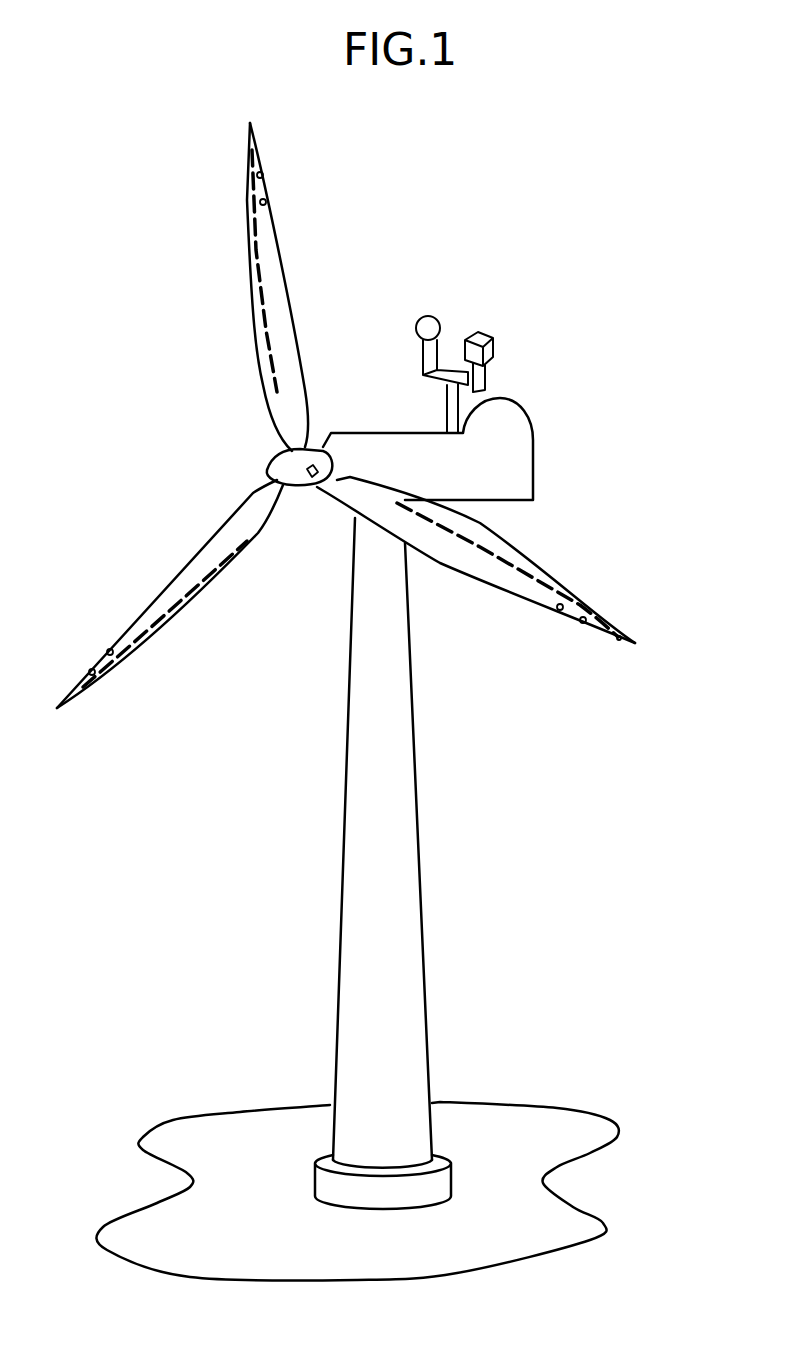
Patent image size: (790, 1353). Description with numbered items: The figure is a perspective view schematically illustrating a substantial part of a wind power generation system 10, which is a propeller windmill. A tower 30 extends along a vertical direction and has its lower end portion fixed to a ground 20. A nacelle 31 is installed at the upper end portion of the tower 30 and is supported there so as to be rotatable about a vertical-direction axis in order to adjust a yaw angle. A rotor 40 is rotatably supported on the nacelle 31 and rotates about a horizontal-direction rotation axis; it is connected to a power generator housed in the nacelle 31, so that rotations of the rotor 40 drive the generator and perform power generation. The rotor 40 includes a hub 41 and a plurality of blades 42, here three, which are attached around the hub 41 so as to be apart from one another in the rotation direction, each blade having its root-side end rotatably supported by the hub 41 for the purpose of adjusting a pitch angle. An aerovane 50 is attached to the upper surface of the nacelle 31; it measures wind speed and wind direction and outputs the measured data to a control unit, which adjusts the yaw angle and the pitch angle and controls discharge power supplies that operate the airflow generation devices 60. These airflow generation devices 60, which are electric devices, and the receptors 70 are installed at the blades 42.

The wind power generation system 10 is at (630, 137).
The ground 20 is at (508, 1117).
The tower 30 is at (398, 848).
The nacelle 31 is at (512, 474).
The rotor 40 is at (320, 263).
The hub 41 is at (318, 483).
The blade 42 is at (272, 182).
The aerovane 50 is at (444, 368).
The airflow generation device 60 is at (258, 330).
The receptor 70 is at (558, 612).